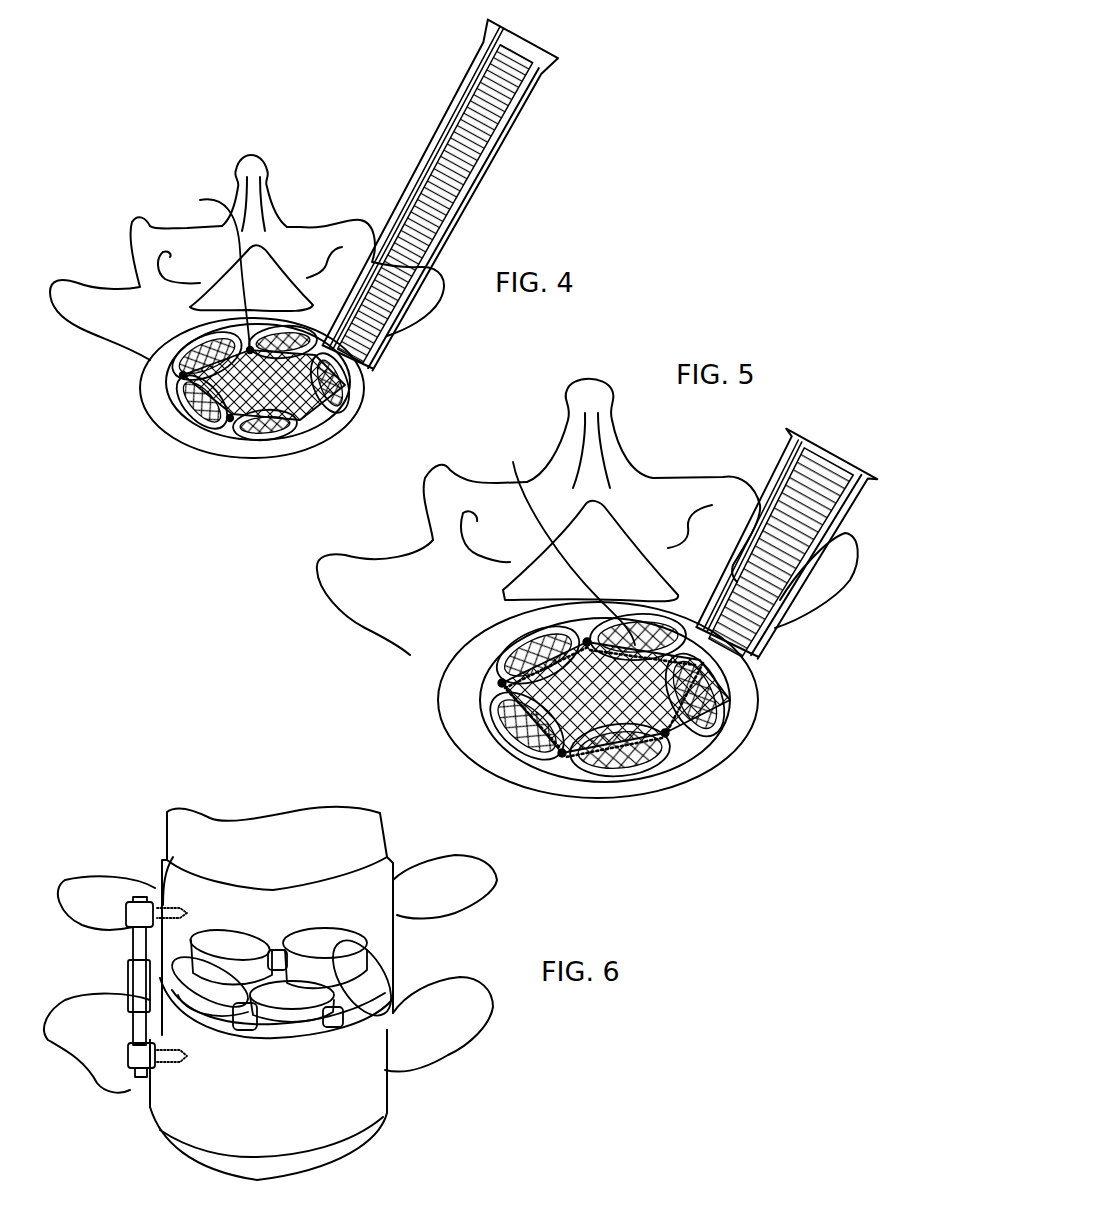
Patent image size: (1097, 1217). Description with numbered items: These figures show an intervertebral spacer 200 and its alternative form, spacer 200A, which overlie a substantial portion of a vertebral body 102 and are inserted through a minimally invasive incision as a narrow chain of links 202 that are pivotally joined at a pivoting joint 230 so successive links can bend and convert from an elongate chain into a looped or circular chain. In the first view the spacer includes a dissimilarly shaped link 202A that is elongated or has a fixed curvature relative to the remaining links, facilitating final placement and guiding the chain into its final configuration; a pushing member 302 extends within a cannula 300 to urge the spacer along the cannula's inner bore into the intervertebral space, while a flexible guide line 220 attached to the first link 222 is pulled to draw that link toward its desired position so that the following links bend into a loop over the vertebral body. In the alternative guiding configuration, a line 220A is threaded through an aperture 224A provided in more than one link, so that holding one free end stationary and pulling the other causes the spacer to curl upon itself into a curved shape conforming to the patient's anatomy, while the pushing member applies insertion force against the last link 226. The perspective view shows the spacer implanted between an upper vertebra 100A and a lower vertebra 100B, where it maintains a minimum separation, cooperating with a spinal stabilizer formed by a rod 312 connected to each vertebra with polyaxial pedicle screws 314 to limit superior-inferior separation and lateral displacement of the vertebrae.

In FIG. 6, the vertebra 100A is at (265, 918).
In FIG. 6, the vertebra 100B is at (295, 1122).
In FIG. 4, the vertebral body 102 is at (332, 427).
In FIG. 5, the vertebral body 102 is at (470, 735).
In FIG. 6, the vertebral body 102 is at (385, 1095).
In FIG. 4, the spacer 200 is at (167, 385).
In FIG. 6, the spacer 200 is at (353, 925).
In FIG. 5, the spacer 200A is at (498, 683).
In FIG. 4, the link 202 is at (187, 425).
In FIG. 5, the link 202 is at (515, 627).
In FIG. 6, the link 202 is at (363, 1008).
In FIG. 4, the link 202A is at (300, 427).
In FIG. 4, the guide line 220 is at (412, 185).
In FIG. 5, the line 220A is at (752, 490).
In FIG. 4, the first link 222 is at (205, 268).
In FIG. 5, the first link 222 is at (564, 541).
In FIG. 5, the aperture 224A is at (548, 714).
In FIG. 5, the last link 226 is at (706, 718).
In FIG. 4, the pivoting joint 230 is at (229, 428).
In FIG. 6, the pivoting joint 230 is at (243, 1038).
In FIG. 4, the cannula 300 is at (450, 223).
In FIG. 5, the cannula 300 is at (779, 549).
In FIG. 4, the pushing member 302 is at (478, 112).
In FIG. 5, the pushing member 302 is at (808, 518).
In FIG. 6, the rod 312 is at (137, 940).
In FIG. 6, the polyaxial pedicle screws 314 is at (158, 895).